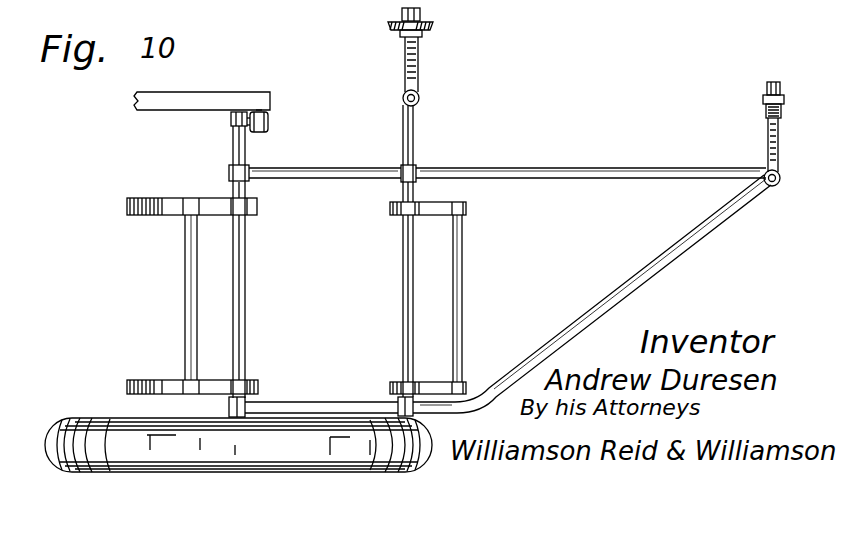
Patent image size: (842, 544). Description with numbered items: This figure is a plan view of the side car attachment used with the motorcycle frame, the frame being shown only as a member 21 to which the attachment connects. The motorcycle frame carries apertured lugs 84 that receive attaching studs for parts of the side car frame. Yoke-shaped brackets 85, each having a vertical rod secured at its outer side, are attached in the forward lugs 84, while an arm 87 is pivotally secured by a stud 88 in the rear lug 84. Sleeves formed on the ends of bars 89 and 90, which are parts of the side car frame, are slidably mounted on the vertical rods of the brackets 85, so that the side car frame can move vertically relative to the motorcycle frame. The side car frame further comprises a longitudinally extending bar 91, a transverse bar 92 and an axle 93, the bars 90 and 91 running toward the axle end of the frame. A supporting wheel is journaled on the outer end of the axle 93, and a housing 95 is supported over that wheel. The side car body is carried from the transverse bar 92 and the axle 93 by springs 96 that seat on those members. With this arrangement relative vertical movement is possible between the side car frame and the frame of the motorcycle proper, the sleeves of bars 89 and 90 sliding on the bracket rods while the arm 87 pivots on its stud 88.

The table top 21 is at (188, 98).
The apertured lugs 84 is at (421, 24).
The brackets 85 is at (404, 66).
The arm 87 is at (236, 121).
The stud 88 is at (263, 133).
The bar 89 is at (415, 143).
The bar 90 is at (632, 172).
The longitudinally extending bar 91 is at (620, 293).
The transverse bar 92 is at (402, 290).
The axle 93 is at (246, 310).
The housing 95 is at (107, 428).
The springs 96 is at (143, 383).